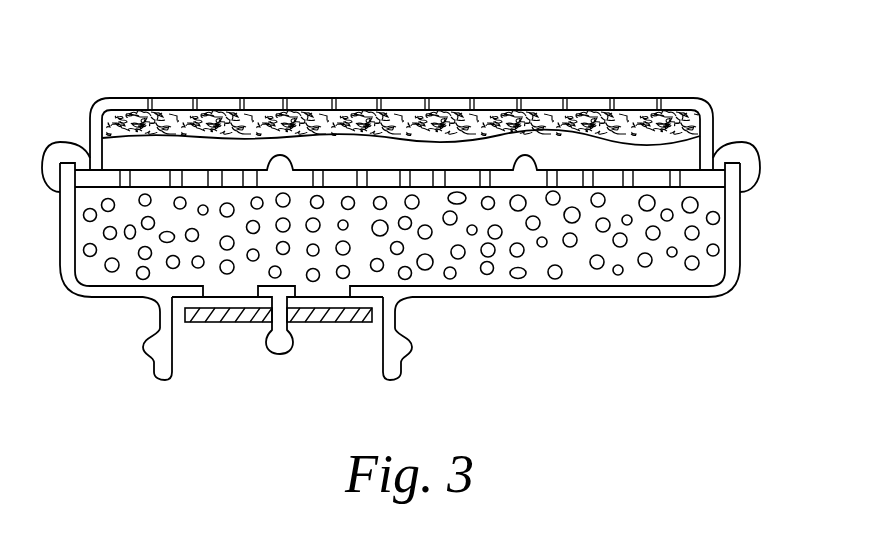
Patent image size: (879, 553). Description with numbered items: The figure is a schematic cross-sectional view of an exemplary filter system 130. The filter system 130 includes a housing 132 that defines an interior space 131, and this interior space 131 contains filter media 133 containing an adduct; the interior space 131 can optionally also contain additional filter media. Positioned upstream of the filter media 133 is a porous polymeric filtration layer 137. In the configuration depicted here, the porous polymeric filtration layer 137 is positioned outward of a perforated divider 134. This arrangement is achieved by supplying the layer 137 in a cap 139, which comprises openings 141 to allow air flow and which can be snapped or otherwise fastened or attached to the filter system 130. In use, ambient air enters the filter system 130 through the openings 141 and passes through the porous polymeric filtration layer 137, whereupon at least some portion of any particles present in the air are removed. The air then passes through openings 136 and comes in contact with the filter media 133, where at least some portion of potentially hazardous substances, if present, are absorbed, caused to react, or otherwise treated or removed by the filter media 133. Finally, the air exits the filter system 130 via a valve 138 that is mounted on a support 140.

The filter system 130 is at (654, 66).
The interior space 131 is at (712, 193).
The housing 132 is at (733, 238).
The filter media 133 is at (226, 205).
The perforated divider 134 is at (105, 183).
The openings 136 is at (482, 175).
The porous polymeric filtration layer 137 is at (697, 120).
The valve 138 is at (218, 317).
The cap 139 is at (167, 98).
The support 140 is at (278, 340).
The openings 141 is at (287, 98).